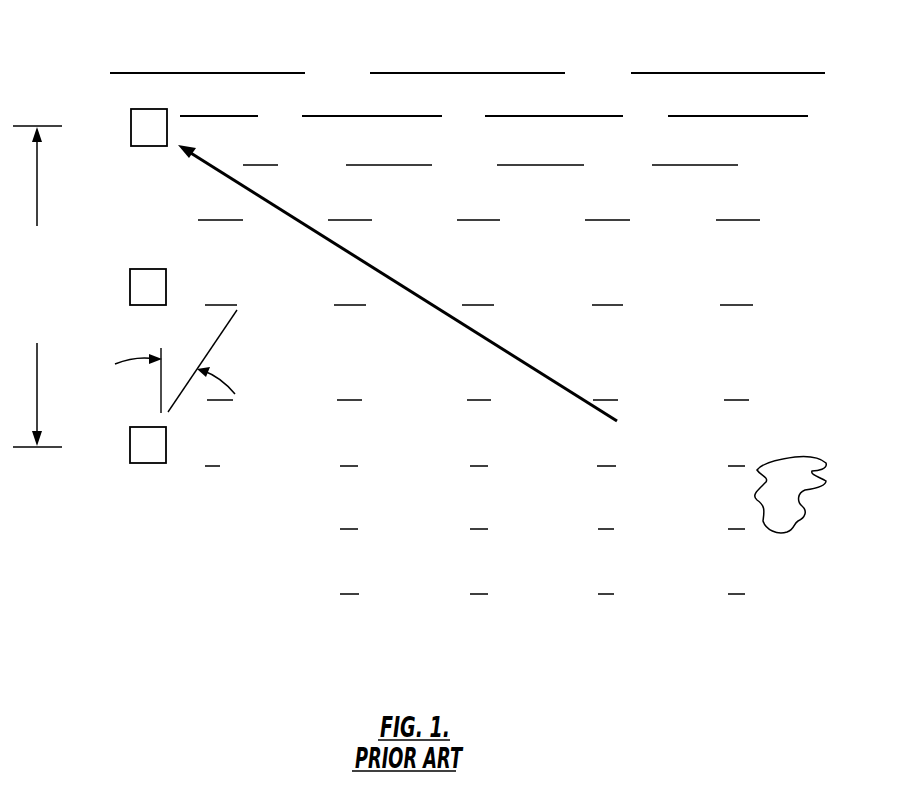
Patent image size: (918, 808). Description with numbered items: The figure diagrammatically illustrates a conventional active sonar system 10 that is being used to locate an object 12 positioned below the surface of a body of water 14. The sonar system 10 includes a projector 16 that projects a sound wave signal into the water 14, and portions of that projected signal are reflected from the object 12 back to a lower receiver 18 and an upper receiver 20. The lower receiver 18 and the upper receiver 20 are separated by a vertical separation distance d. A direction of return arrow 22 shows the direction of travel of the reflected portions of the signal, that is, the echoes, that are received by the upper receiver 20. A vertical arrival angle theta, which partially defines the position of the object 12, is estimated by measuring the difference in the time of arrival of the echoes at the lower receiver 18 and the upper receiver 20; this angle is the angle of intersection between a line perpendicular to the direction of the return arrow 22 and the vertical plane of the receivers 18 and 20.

The active sonar system 10 is at (92, 461).
The object 12 is at (790, 531).
The body of water 14 is at (687, 74).
The projector 16 is at (130, 287).
The lower receiver 18 is at (166, 445).
The upper receiver 20 is at (131, 126).
The direction of return arrow 22 is at (421, 296).